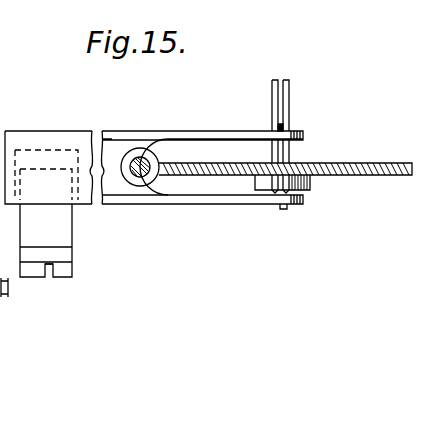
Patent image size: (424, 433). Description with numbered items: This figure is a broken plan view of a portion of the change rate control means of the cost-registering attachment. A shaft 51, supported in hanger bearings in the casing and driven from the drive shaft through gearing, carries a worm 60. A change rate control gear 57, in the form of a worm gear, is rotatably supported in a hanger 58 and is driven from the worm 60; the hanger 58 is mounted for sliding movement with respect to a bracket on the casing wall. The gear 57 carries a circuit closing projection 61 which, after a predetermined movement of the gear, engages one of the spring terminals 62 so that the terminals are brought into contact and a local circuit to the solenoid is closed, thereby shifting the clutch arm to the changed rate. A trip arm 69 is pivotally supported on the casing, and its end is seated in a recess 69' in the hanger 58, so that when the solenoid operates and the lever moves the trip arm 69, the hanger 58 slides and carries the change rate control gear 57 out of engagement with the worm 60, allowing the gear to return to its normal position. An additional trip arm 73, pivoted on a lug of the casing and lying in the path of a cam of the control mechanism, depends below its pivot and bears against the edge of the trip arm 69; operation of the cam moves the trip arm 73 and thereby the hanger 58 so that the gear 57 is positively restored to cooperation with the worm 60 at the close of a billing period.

The shaft 51 is at (142, 165).
The change rate control gear 57 is at (381, 176).
The hanger 58 is at (110, 127).
The worm 60 is at (150, 191).
The circuit closing projection 61 is at (291, 157).
The spring terminals 62 is at (287, 80).
The trip arm 69 is at (67, 240).
The recess 69' is at (46, 152).
The additional trip arm 73 is at (49, 266).